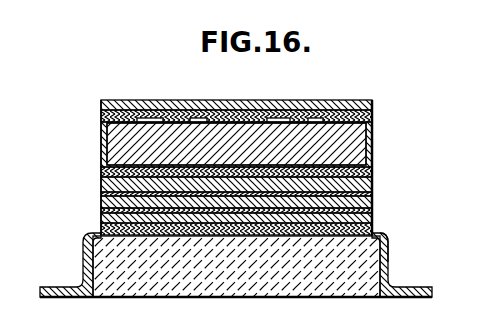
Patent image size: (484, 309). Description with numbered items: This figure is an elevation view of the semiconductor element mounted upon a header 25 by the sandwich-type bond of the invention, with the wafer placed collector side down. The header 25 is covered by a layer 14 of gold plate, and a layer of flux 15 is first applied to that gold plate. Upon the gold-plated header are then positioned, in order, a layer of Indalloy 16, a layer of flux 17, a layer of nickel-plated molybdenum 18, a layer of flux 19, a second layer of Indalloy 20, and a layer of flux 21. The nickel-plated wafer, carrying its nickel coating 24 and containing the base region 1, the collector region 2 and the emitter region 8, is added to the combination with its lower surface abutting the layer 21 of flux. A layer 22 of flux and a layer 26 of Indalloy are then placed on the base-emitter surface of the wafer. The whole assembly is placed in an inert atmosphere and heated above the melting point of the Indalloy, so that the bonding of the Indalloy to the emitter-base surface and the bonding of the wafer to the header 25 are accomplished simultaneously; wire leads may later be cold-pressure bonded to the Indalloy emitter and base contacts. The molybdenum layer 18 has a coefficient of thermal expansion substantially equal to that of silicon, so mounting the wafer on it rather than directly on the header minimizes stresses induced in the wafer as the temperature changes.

The base region 1 is at (170, 120).
The collector region 2 is at (108, 136).
The emitter region 8 is at (237, 120).
The layer of gold plate 14 is at (82, 260).
The layer of flux 15 is at (100, 230).
The Indalloy layer 16 is at (372, 213).
The flux layer 17 is at (100, 210).
The nickel-plated molybdenum layer 18 is at (372, 197).
The flux layer 19 is at (102, 192).
The Indalloy layer 20 is at (372, 178).
The flux layer 21 is at (102, 173).
The flux layer 22 is at (372, 116).
The nickel coating 24 is at (372, 142).
The header 25 is at (397, 250).
The Indalloy layer 26 is at (317, 100).